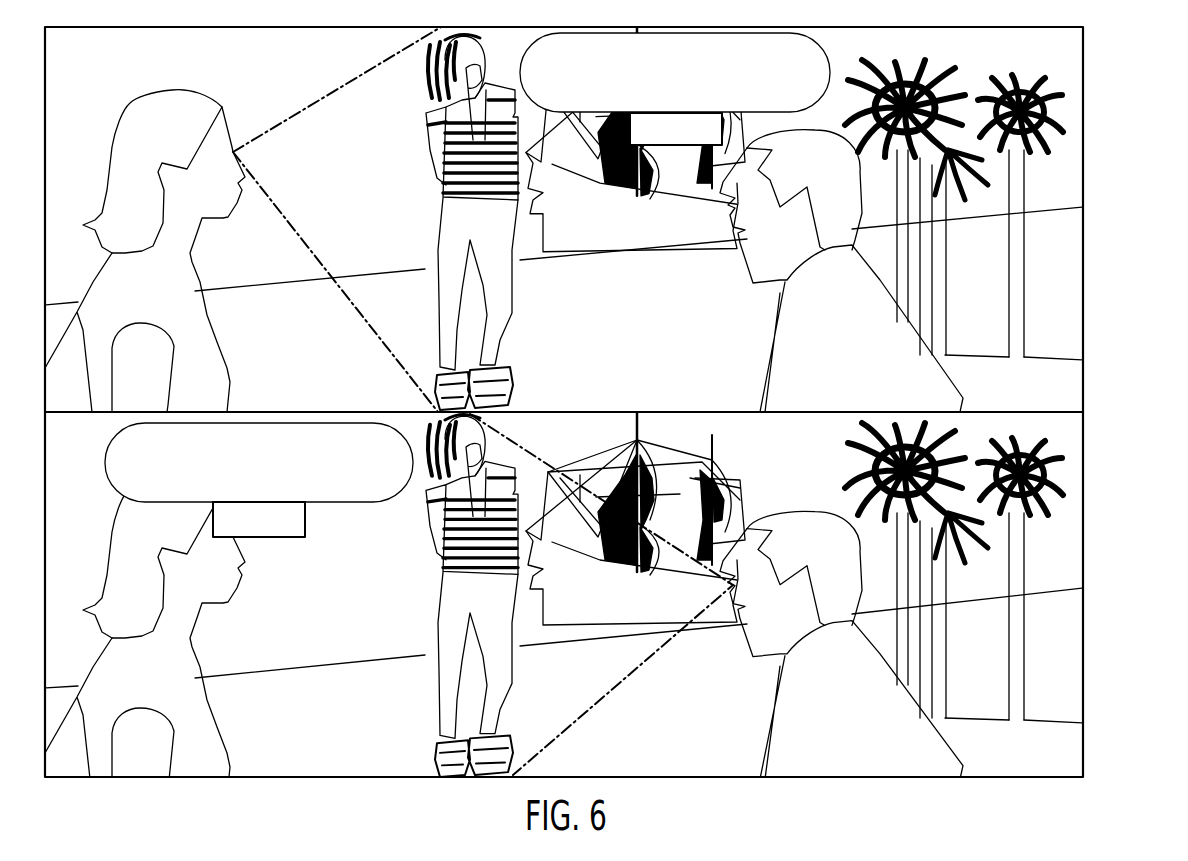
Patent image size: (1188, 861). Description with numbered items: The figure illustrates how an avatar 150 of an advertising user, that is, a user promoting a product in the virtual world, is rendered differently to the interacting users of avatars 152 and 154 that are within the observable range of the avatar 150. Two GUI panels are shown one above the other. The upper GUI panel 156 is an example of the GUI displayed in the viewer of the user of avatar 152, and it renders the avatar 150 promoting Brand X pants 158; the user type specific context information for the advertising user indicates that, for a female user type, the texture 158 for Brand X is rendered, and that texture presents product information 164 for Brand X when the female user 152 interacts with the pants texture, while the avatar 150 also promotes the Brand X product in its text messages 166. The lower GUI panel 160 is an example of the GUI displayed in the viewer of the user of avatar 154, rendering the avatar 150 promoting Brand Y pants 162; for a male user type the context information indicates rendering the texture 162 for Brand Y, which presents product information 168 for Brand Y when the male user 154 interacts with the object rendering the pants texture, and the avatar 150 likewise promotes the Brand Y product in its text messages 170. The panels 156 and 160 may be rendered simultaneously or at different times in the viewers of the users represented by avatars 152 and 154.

The avatar of advertising user 150 is at (435, 222).
The avatar of female user 152 is at (192, 248).
The avatar of male user 154 is at (740, 272).
The GUI panel 156 is at (1085, 277).
The Brand X pants texture 158 is at (430, 231).
The GUI panel 160 is at (1085, 663).
The Brand Y pants texture 162 is at (433, 608).
The Brand X product information 164 is at (667, 145).
The Brand X text messages 166 is at (822, 52).
The Brand Y product information 168 is at (282, 538).
The Brand Y text messages 170 is at (347, 502).